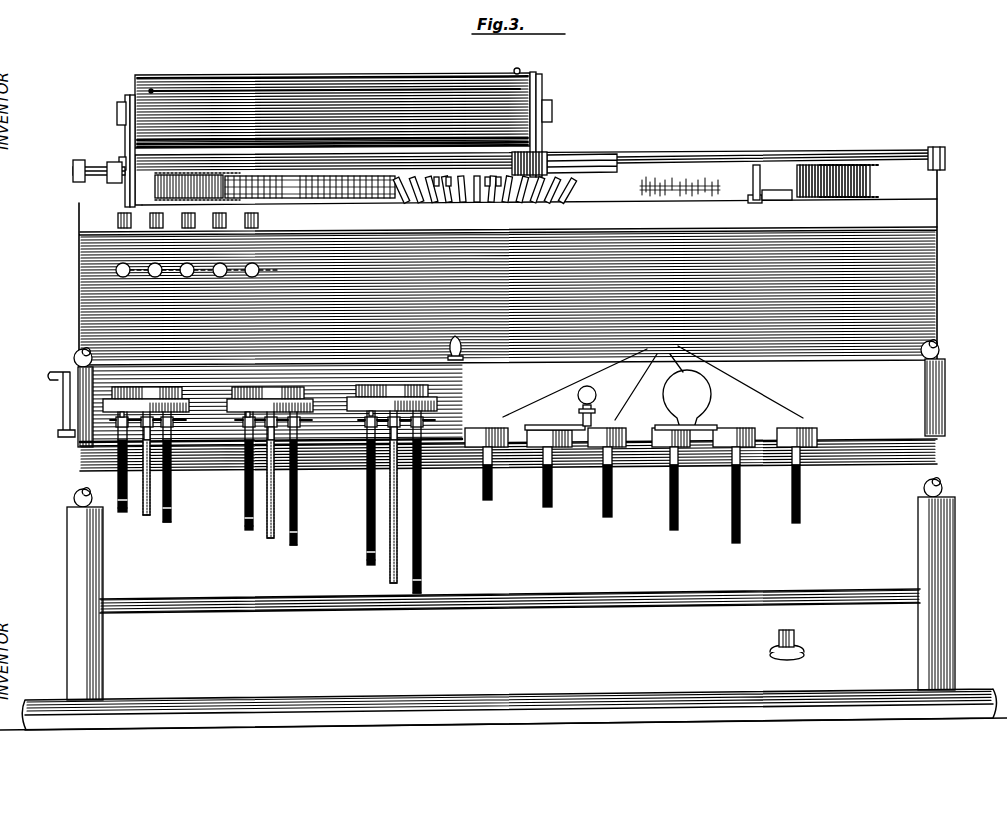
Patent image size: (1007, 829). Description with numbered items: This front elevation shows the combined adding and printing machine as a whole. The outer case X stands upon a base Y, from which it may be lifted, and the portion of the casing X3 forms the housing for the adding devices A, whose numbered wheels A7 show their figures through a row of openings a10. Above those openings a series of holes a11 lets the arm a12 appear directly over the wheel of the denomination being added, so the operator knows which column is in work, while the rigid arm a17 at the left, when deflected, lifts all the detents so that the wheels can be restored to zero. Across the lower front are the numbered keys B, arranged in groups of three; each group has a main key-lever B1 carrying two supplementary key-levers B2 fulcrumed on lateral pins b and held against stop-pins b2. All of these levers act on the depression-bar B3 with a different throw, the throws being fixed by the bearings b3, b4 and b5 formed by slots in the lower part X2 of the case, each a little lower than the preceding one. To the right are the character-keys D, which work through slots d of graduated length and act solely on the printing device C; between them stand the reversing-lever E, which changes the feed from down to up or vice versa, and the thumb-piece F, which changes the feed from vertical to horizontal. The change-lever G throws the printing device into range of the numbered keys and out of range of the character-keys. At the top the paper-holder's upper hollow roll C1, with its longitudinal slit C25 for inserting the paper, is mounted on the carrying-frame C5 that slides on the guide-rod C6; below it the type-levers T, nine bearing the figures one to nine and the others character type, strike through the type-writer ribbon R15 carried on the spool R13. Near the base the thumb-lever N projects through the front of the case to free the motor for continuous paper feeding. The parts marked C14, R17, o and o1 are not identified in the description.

The adding devices A is at (508, 297).
The numbered wheels A7 is at (116, 271).
The openings a10 is at (227, 276).
The holes a11 is at (260, 220).
The arm a12 is at (150, 218).
The rigid arm a17 is at (63, 403).
The numbered keys B is at (380, 385).
The main key-lever B1 is at (378, 462).
The supplementary key-levers B2 is at (425, 432).
The depression-bar B3 is at (425, 571).
The lateral pins b is at (428, 420).
The stop-pins b2 is at (424, 428).
The slot bearing b3 is at (368, 565).
The middle bearing b4 is at (393, 583).
The slot bearing b5 is at (420, 593).
The printing device C is at (544, 122).
The upper hollow roll C1 is at (332, 110).
The carrying-frame C5 is at (546, 140).
The guide-rod C6 is at (766, 165).
The carriage part C14 is at (268, 197).
The longitudinal slit C25 is at (246, 90).
The character-keys D is at (653, 379).
The slots d is at (815, 528).
The reversing-lever E is at (595, 391).
The thumb-piece F is at (686, 400).
The change-lever G is at (463, 352).
The thumb-lever N is at (805, 656).
The type stop o is at (448, 177).
The type stop o1 is at (750, 203).
The ribbon spool R13 is at (832, 170).
The type-writer ribbon R15 is at (683, 180).
The ribbon spool R17 is at (197, 186).
The type-levers T is at (515, 203).
The outer case X is at (508, 430).
The lower part of the case X2 is at (510, 580).
The adding-mechanism housing X3 is at (508, 256).
The base Y is at (258, 700).